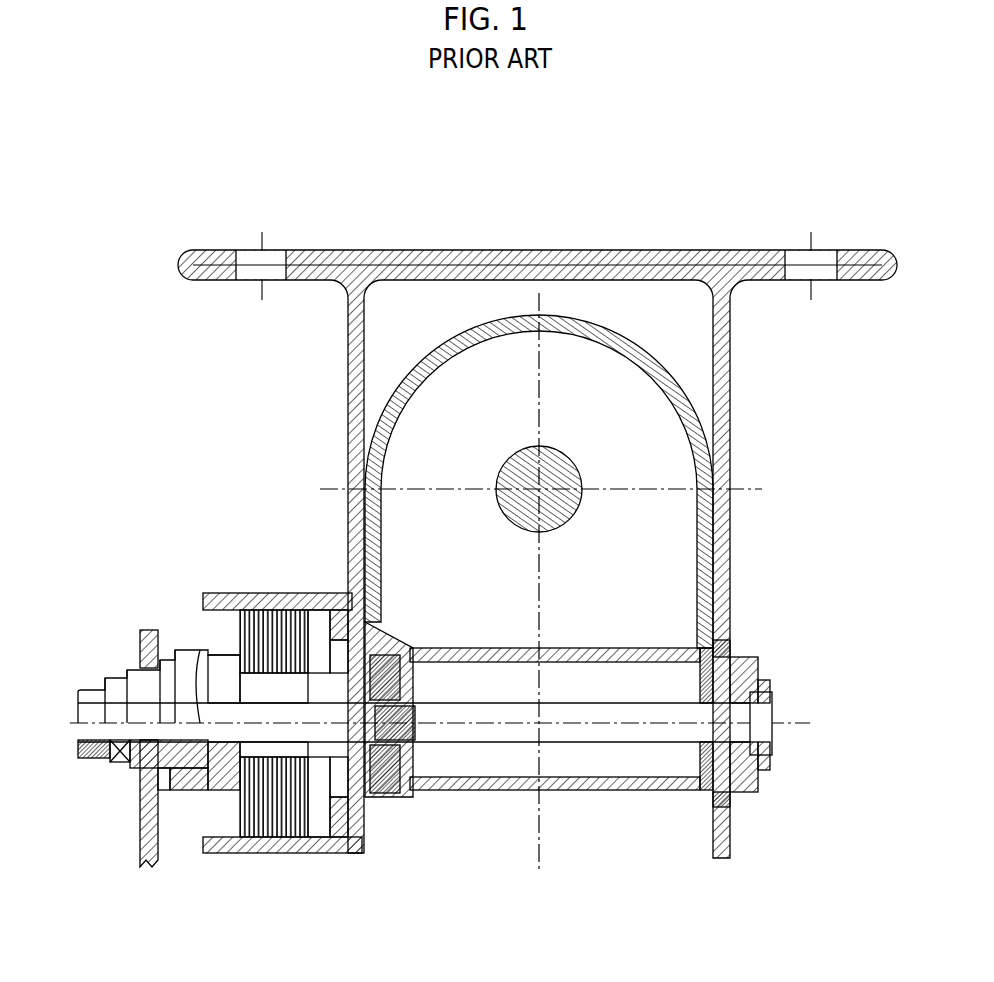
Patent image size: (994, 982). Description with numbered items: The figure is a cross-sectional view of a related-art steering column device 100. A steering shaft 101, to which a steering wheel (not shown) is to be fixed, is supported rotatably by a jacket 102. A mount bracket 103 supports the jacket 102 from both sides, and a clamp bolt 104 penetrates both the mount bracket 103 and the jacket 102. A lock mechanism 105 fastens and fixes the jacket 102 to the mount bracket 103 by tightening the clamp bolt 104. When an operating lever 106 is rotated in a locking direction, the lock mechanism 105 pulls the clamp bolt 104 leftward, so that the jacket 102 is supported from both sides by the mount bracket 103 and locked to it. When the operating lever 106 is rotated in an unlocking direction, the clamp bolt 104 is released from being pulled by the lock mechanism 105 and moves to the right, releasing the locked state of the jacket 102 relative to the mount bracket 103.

The steering column device 100 is at (519, 208).
The steering shaft 101 is at (577, 464).
The jacket 102 is at (651, 356).
The mount bracket 103 is at (348, 373).
The clamp bolt 104 is at (614, 737).
The lock mechanism 105 is at (207, 798).
The operating lever 106 is at (140, 823).